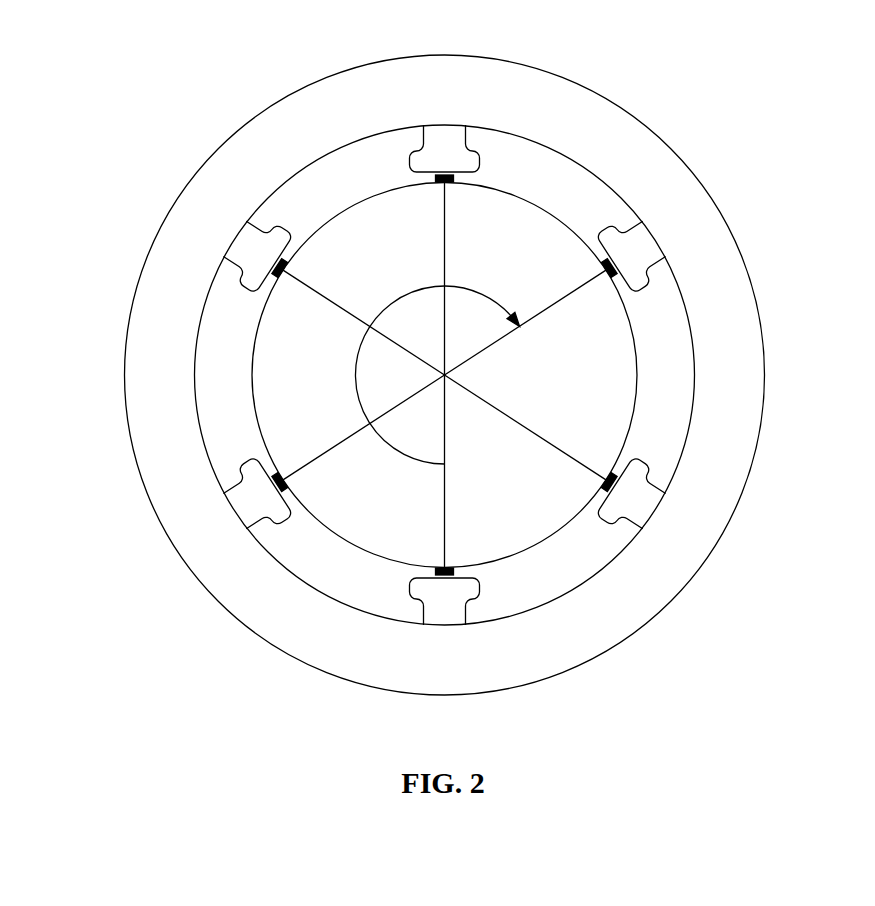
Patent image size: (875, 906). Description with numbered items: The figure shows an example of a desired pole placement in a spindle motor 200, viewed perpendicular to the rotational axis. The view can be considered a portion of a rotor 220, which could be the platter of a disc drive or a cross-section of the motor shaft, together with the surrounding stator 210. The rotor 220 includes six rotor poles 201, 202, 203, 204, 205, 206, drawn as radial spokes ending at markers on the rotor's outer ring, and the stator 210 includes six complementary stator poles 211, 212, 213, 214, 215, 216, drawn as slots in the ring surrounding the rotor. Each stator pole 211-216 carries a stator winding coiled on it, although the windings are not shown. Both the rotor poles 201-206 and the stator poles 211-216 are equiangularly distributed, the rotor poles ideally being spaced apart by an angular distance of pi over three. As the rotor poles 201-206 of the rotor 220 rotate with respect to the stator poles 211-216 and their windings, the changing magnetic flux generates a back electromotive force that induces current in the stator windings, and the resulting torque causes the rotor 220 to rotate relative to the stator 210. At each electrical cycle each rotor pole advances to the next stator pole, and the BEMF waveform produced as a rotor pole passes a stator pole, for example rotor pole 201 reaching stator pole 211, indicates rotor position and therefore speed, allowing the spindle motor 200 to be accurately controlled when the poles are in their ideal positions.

The spindle motor 200 is at (712, 80).
The rotor pole 201 is at (457, 184).
The rotor pole 202 is at (613, 278).
The rotor pole 203 is at (598, 489).
The rotor pole 204 is at (437, 567).
The rotor pole 205 is at (285, 475).
The rotor pole 206 is at (286, 263).
The stator 210 is at (748, 372).
The stator pole 211 is at (473, 127).
The stator pole 212 is at (668, 262).
The stator pole 213 is at (636, 532).
The stator pole 214 is at (472, 625).
The stator pole 215 is at (222, 492).
The stator pole 216 is at (253, 212).
The rotor 220 is at (640, 373).